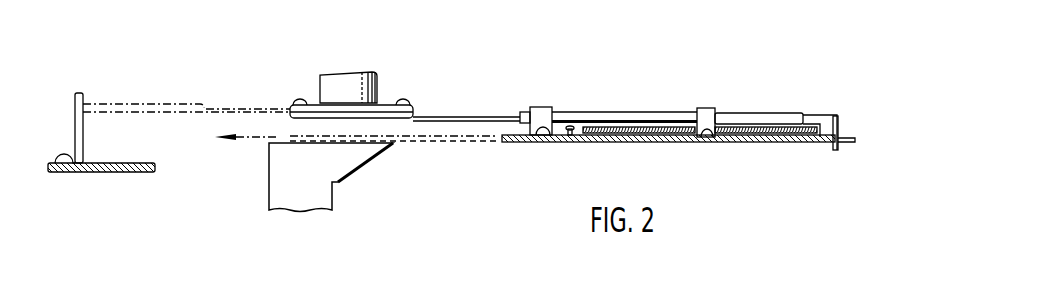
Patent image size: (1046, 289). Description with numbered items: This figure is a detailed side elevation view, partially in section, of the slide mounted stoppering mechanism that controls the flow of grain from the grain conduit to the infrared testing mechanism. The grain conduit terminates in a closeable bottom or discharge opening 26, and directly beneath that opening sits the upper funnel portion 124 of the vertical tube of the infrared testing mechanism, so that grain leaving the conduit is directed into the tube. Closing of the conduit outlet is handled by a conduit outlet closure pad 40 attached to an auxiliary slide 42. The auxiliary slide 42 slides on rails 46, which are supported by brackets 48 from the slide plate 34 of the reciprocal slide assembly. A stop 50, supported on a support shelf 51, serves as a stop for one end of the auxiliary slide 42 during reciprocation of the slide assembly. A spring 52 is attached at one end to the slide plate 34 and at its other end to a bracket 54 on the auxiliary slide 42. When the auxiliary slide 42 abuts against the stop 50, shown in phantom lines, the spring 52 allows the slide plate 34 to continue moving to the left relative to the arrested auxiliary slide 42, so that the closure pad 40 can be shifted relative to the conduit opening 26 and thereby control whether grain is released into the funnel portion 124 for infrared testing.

The closeable bottom or lower end 26 is at (343, 101).
The slide plate 34 is at (513, 143).
The conduit outlet closure pad 40 is at (155, 103).
The auxiliary slide 42 is at (501, 115).
The rails 46 is at (577, 112).
The brackets 48 is at (706, 107).
The stop 50 is at (83, 96).
The support shelf 51 is at (130, 173).
The spring 52 is at (768, 140).
The bracket 54 is at (832, 152).
The upper funnel portion 124 is at (320, 160).